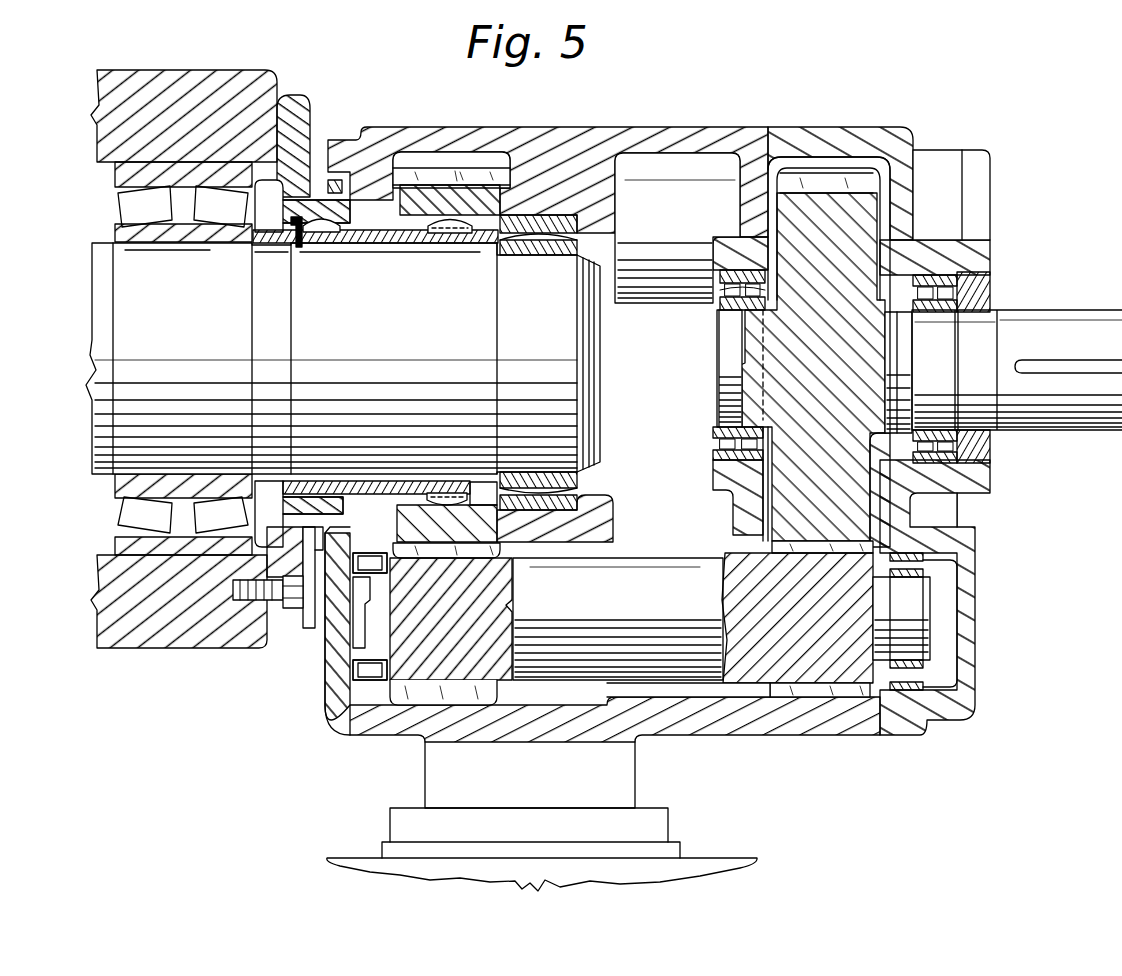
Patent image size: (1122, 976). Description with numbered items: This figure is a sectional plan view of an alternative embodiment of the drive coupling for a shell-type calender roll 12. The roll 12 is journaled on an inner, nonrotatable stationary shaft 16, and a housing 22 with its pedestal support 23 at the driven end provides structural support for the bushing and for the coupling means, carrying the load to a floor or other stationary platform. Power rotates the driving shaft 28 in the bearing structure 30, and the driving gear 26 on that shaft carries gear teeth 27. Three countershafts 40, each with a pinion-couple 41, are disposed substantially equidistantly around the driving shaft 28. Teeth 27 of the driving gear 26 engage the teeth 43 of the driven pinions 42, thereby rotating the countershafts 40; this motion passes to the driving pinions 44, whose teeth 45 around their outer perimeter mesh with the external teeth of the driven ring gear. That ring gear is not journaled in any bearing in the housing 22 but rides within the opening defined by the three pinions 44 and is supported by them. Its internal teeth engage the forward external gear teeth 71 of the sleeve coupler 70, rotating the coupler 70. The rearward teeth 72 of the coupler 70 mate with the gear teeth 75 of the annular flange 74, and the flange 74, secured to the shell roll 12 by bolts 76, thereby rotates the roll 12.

The shell-type calender roll 12 is at (173, 642).
The stationary shaft 16 is at (364, 351).
The housing 22 is at (712, 128).
The pedestal support 23 is at (637, 792).
The driving gear 26 is at (790, 343).
The gear teeth 27 is at (830, 177).
The driving shaft 28 is at (990, 357).
The bearing structure 30 is at (963, 275).
The countershaft 40 is at (688, 690).
The pinion-couple 41 is at (596, 610).
The driven pinion 42 is at (770, 583).
The teeth of driven pinion 43 is at (840, 690).
The driving pinion 44 is at (432, 668).
The teeth of driving pinion 45 is at (460, 685).
The sleeve coupler 70 is at (392, 240).
The forward external gear teeth 71 is at (443, 232).
The coupler teeth 72 is at (328, 228).
The annular flange 74 is at (313, 557).
The flange gear teeth 75 is at (299, 244).
The bolts 76 is at (293, 612).